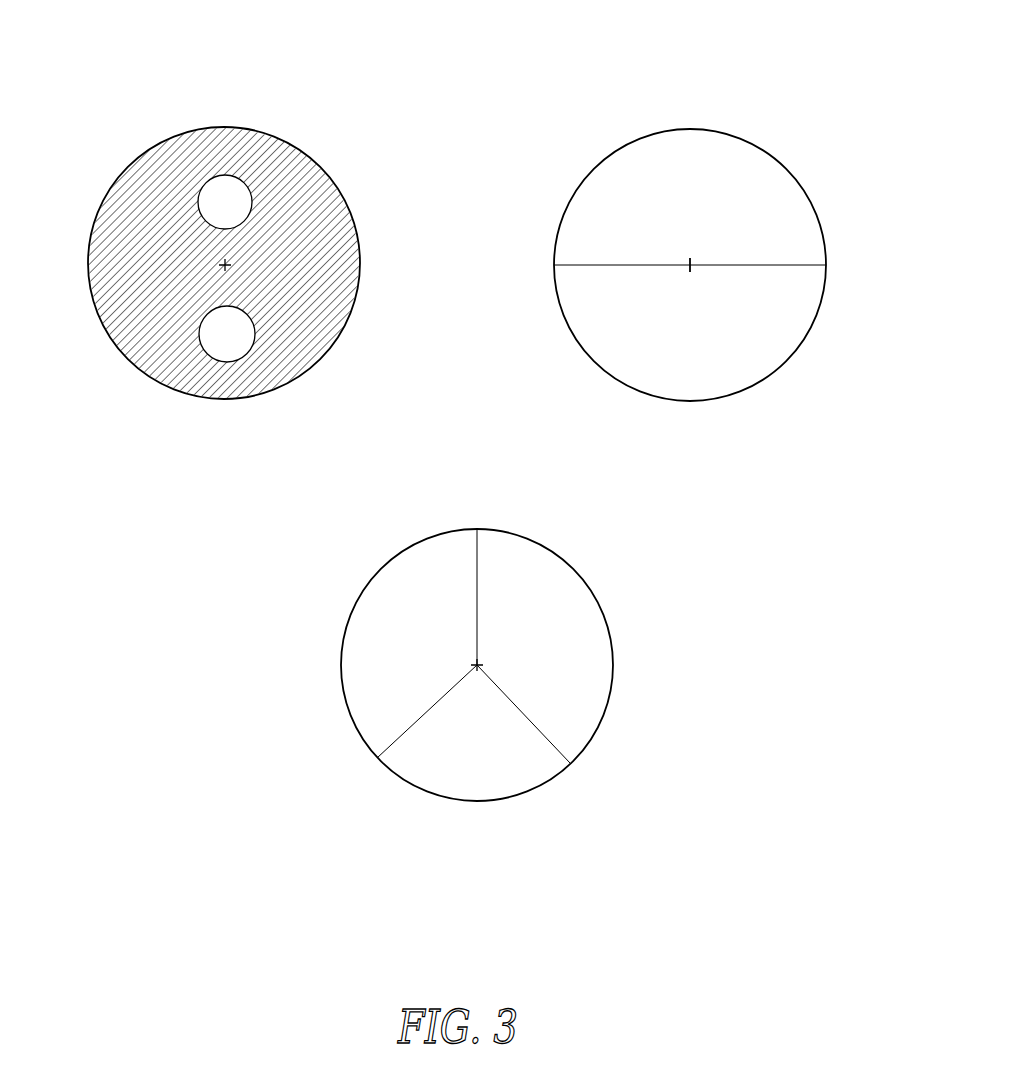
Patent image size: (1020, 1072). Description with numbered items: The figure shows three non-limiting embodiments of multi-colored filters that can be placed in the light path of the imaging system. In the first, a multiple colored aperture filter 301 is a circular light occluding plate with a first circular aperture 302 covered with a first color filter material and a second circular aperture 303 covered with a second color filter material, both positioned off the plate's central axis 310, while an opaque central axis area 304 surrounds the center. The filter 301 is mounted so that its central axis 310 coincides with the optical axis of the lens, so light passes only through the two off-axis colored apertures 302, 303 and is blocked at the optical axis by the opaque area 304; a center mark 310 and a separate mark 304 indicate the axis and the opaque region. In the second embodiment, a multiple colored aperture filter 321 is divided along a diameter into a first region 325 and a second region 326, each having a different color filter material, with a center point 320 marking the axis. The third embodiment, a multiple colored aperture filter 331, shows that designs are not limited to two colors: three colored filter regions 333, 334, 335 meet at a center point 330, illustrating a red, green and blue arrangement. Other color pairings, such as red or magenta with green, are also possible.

The multiple colored aperture filter 301 is at (220, 125).
The first circular aperture 302 is at (227, 176).
The second circular aperture 303 is at (227, 361).
The opaque central axis area 304 is at (302, 327).
The central axis 310 is at (230, 267).
The rotation center 320 is at (692, 260).
The multiple colored aperture filter 321 is at (554, 266).
The first region 325 is at (617, 168).
The second region 326 is at (628, 343).
The rotation center 330 is at (477, 662).
The multiple colored aperture filter 331 is at (473, 529).
The colored filter region 333 is at (533, 555).
The colored filter region 334 is at (515, 782).
The colored filter region 335 is at (373, 620).